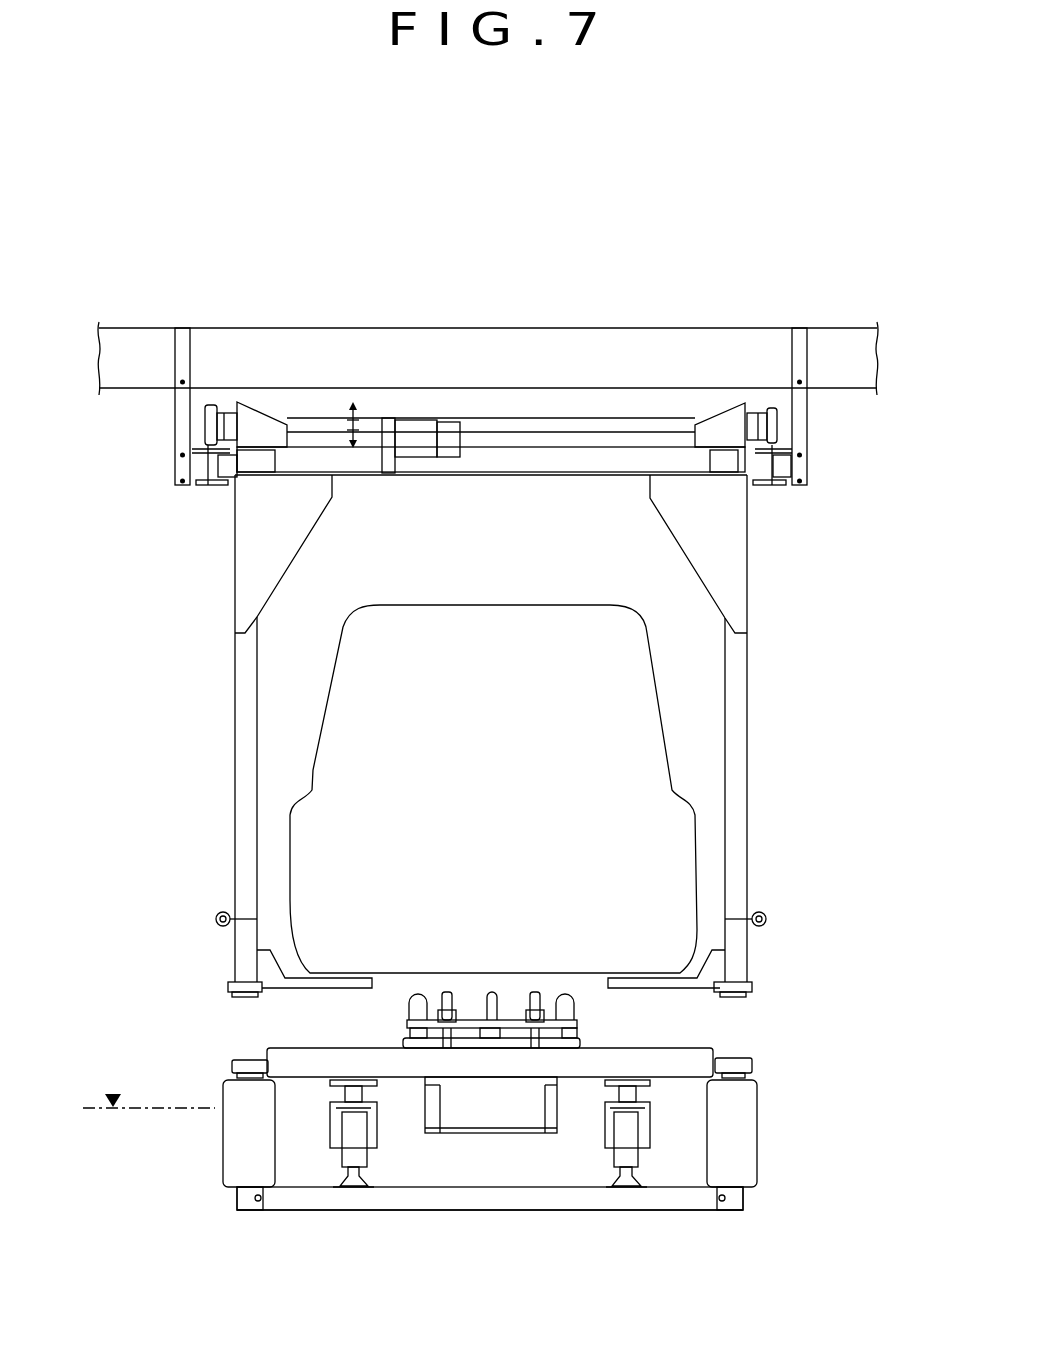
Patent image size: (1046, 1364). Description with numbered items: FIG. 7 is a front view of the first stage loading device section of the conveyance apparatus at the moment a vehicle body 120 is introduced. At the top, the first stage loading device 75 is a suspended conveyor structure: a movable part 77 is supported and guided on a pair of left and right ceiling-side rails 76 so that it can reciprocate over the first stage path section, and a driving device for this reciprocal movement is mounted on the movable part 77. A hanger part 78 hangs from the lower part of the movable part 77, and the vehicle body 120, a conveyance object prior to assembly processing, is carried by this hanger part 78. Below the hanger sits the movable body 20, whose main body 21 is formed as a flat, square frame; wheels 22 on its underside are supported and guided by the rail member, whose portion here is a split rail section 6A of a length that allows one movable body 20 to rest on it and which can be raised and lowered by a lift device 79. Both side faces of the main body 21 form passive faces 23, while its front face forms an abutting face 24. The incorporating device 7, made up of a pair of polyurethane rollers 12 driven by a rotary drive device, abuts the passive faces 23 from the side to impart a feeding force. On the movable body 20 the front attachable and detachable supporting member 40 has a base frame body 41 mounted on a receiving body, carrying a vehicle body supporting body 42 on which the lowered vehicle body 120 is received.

The incorporating device 7 is at (538, 1158).
The rollers 12 is at (203, 1084).
The movable body 20 is at (692, 1022).
The main body 21 is at (678, 1085).
The wheels 22 is at (612, 1168).
The passive faces 23 is at (233, 1060).
The abutting face 24 is at (308, 1090).
The front attachable and detachable supporting member 40 is at (533, 958).
The base frame body 41 is at (578, 1028).
The vehicle body supporting body 42 is at (500, 996).
The split rail section 6A is at (360, 1178).
The first stage loading device 75 is at (197, 522).
The ceiling-side rails 76 is at (773, 463).
The movable part 77 is at (520, 422).
The hanger part 78 is at (731, 781).
The lift device 79 is at (662, 1221).
The vehicle body 120 is at (640, 682).